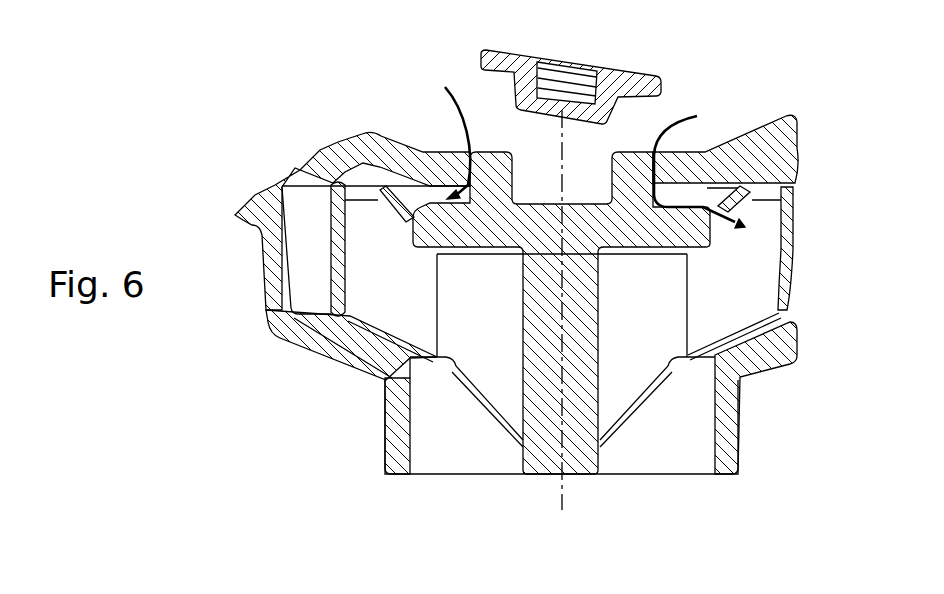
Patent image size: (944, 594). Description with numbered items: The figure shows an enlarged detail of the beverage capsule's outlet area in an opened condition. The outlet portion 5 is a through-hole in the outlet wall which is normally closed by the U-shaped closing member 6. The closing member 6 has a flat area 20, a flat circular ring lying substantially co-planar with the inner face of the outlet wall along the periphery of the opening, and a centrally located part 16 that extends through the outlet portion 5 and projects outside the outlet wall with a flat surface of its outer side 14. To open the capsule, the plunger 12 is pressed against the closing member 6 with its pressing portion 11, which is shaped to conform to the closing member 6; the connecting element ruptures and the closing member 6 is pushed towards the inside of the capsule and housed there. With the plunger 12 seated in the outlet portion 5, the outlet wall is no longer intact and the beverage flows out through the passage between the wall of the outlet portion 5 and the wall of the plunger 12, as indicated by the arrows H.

The outlet portion 5 is at (594, 166).
The closing member 6 is at (627, 77).
The pressing portion 11 is at (633, 173).
The plunger 12 is at (505, 418).
The outer side 14 is at (541, 113).
The central part 16 is at (587, 103).
The flat area 20 is at (475, 88).
The arrows H is at (444, 87).